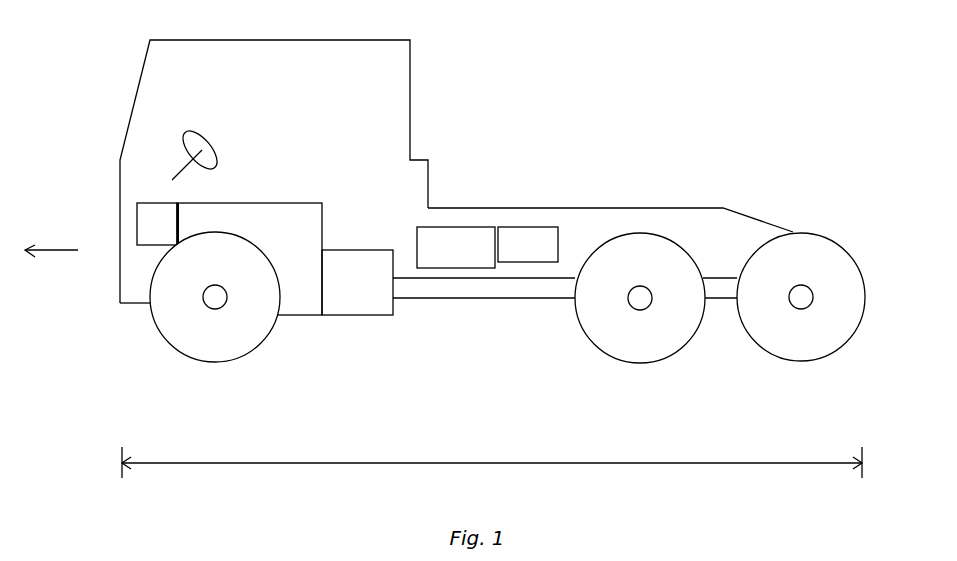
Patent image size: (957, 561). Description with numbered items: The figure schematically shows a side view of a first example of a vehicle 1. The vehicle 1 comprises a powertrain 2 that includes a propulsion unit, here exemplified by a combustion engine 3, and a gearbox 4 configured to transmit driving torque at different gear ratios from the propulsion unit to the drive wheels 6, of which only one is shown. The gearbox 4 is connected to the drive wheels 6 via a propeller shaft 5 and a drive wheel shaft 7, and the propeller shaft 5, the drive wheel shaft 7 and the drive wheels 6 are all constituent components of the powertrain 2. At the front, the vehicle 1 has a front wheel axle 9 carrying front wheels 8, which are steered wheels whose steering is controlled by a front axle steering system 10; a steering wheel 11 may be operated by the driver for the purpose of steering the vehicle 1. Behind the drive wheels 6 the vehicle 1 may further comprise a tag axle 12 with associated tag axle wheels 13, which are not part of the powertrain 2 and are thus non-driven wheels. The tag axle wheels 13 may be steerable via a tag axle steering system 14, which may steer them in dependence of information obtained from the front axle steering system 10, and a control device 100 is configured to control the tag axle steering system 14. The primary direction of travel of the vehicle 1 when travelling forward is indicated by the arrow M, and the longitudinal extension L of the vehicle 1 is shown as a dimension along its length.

The vehicle 1 is at (584, 96).
The powertrain 2 is at (380, 357).
The combustion engine 3 is at (270, 218).
The gearbox 4 is at (368, 270).
The propeller shaft 5 is at (507, 288).
The drive wheels 6 is at (660, 343).
The drive wheel shaft 7 is at (636, 303).
The front wheels 8 is at (215, 345).
The front wheel axle 9 is at (210, 303).
The front axle steering system 10 is at (148, 215).
The steering wheel 11 is at (188, 130).
The tag axle 12 is at (808, 292).
The tag axle wheels 13 is at (837, 332).
The tag axle steering system 14 is at (535, 237).
The control device 100 is at (457, 237).
The longitudinal extension L is at (492, 457).
The arrow indicating primary direction of travel M is at (65, 252).